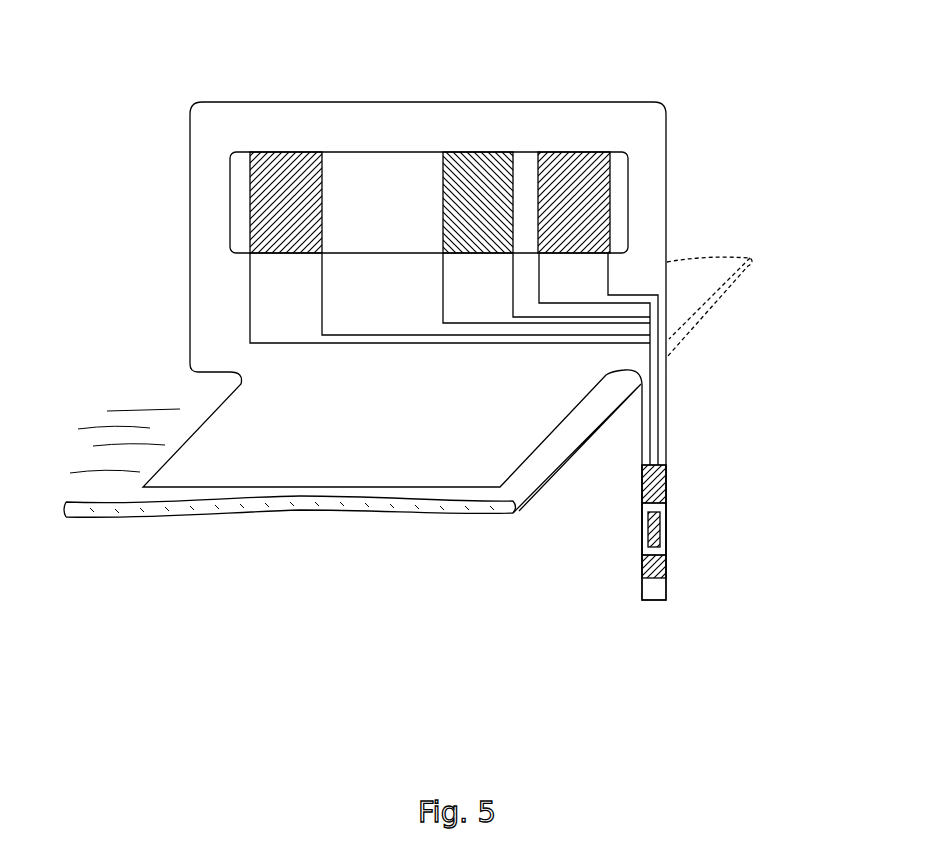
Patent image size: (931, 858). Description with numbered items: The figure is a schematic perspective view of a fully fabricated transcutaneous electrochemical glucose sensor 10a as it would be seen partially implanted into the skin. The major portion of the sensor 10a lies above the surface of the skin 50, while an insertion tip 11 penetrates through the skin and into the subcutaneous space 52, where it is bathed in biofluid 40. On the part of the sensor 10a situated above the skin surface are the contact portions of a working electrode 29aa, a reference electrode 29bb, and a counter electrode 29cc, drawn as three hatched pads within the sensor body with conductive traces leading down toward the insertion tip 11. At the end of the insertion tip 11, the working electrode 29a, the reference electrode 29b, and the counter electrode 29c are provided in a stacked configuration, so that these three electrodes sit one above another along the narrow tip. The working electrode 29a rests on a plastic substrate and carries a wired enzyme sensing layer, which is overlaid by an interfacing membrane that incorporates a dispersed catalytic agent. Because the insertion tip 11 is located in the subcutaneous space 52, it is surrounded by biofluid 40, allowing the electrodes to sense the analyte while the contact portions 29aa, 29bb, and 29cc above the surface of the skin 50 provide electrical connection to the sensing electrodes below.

The sensor 10a is at (270, 92).
The working electrode contact portion 29aa is at (282, 163).
The reference electrode contact portion 29bb is at (468, 160).
The counter electrode contact portion 29cc is at (582, 160).
The insertion tip 11 is at (753, 541).
The working electrode 29a is at (686, 579).
The reference electrode 29b is at (660, 530).
The counter electrode 29c is at (663, 486).
The surface of the skin 50 is at (172, 404).
The subcutaneous space 52 is at (103, 523).
The biofluid 40 is at (496, 668).